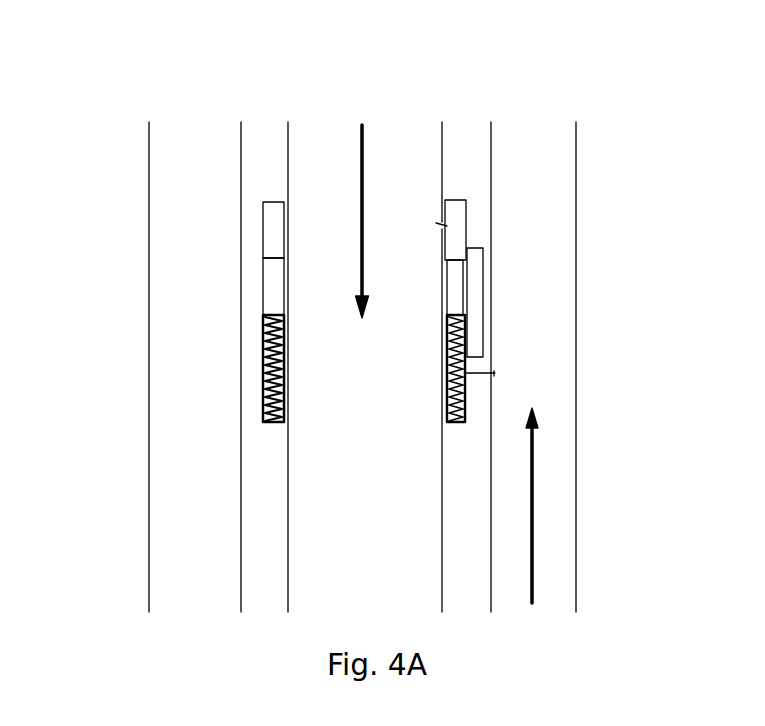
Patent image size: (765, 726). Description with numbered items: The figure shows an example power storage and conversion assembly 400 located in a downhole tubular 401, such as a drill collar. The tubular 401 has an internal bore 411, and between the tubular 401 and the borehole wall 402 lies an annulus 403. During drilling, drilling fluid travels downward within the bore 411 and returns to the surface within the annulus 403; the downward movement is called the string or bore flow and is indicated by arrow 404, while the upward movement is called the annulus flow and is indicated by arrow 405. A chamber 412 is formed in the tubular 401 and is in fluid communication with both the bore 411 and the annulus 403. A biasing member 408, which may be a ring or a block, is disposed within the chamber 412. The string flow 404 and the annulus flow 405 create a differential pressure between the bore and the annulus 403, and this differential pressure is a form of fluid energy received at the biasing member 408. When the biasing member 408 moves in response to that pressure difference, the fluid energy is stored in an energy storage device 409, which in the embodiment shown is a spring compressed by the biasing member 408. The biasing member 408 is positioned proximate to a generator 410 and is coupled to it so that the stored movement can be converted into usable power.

The power storage and conversion assembly 400 is at (104, 185).
The downhole tubular 401 is at (468, 135).
The borehole wall 402 is at (576, 165).
The annulus 403 is at (545, 132).
The string flow 404 is at (360, 158).
The annulus flow 405 is at (532, 540).
The biasing member 408 is at (452, 270).
The energy storage device 409 is at (460, 425).
The generator 410 is at (483, 342).
The internal bore 411 is at (315, 470).
The chamber 412 is at (456, 200).